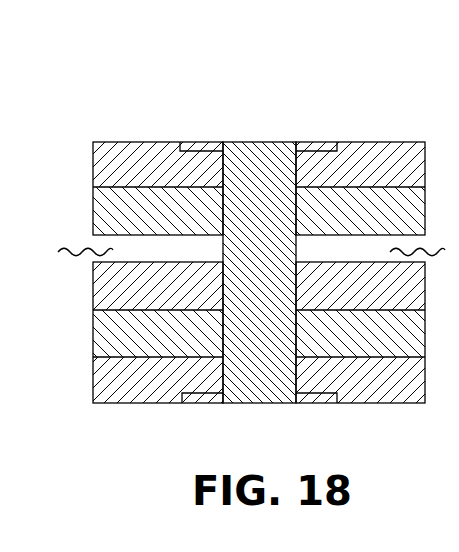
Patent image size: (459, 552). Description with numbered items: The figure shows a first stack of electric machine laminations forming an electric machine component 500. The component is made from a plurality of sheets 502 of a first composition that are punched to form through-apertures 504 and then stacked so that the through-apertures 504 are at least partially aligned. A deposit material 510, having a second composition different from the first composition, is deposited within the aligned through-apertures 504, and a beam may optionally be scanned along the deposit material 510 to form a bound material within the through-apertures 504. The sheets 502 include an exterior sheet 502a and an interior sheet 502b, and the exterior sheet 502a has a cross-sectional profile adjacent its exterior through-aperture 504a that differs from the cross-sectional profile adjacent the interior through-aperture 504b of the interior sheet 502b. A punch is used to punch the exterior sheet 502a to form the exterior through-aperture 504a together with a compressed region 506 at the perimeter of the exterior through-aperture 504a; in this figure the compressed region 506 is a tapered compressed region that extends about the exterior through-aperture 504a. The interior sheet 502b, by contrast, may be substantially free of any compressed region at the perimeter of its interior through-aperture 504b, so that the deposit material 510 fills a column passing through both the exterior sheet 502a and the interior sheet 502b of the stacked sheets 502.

The electric machine component 500 is at (213, 58).
The sheets 502 is at (93, 337).
The exterior sheet 502a is at (93, 163).
The interior sheet 502b is at (93, 218).
The through-apertures 504 is at (224, 333).
The exterior through-aperture 504a is at (235, 164).
The interior through-aperture 504b is at (245, 209).
The compressed region 506 is at (315, 150).
The deposit material 510 is at (280, 279).